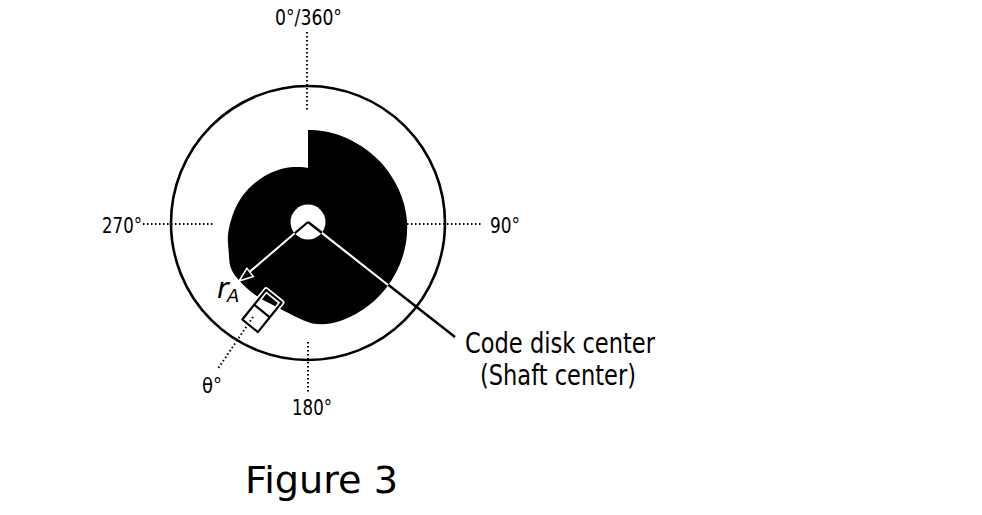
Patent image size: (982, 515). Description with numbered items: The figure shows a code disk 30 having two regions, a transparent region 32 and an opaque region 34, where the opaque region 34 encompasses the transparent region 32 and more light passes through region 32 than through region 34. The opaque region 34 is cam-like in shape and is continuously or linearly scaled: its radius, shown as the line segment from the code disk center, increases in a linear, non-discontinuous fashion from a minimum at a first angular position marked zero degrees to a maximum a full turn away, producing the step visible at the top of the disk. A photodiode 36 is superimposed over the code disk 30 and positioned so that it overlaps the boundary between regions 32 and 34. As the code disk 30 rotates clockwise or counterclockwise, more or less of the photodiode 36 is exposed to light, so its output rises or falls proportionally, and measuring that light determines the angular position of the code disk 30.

The code disk 30 is at (436, 220).
The transparent region 32 is at (413, 187).
The opaque region 34 is at (405, 253).
The photodiode 36 is at (253, 317).